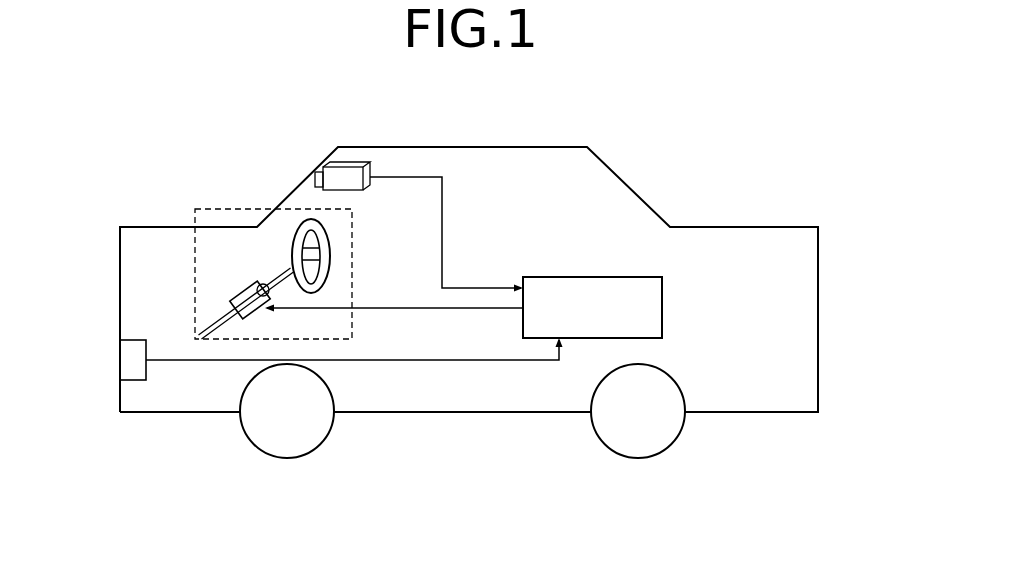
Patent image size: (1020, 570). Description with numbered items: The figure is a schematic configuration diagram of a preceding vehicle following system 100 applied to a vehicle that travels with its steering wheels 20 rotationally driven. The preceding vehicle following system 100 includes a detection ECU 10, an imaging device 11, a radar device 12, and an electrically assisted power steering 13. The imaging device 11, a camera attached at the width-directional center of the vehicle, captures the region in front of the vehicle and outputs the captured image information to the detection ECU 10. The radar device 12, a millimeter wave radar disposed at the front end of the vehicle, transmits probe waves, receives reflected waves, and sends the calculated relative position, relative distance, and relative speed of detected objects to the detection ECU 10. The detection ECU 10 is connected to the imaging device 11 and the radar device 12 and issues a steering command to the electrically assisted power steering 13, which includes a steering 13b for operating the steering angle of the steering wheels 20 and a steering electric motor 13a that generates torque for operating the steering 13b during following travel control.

The preceding vehicle following system 100 is at (646, 180).
The detection ECU 10 is at (560, 277).
The imaging device 11 is at (352, 165).
The radar device 12 is at (130, 353).
The electrically assisted power steering 13 is at (212, 208).
The steering electric motor 13a is at (242, 295).
The steering 13b is at (298, 232).
The steering wheels 20 is at (318, 442).